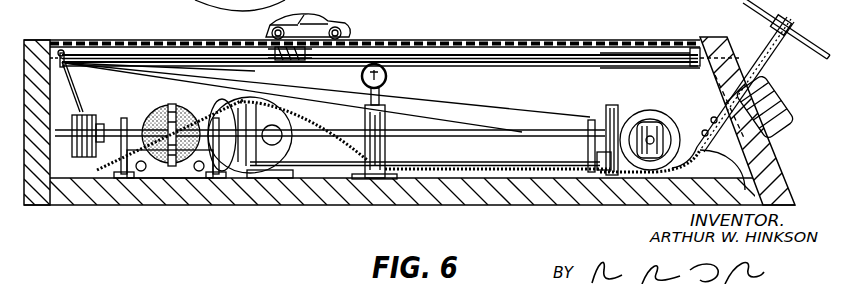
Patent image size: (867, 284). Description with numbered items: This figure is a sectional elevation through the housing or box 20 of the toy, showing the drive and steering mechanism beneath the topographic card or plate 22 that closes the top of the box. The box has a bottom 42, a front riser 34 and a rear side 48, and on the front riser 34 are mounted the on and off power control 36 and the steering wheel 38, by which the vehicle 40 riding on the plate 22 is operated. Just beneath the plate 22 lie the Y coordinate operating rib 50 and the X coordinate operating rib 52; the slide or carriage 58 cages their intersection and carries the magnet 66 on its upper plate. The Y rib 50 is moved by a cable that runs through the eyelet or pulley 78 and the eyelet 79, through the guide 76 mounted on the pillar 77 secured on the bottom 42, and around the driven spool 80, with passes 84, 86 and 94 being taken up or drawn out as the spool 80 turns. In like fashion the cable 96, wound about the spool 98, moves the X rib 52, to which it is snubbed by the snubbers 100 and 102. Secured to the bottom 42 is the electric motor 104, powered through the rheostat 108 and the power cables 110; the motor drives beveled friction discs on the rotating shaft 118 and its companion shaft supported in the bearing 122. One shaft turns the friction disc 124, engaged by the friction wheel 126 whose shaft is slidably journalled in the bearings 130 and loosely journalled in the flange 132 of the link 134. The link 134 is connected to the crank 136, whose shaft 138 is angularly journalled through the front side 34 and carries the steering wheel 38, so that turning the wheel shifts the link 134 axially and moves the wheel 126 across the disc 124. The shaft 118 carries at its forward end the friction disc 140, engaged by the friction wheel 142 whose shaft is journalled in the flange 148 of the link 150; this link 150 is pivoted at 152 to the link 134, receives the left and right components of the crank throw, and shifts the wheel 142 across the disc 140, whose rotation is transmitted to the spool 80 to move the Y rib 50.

The housing or box 20 is at (659, 5).
The topographic card or plate 22 is at (478, 43).
The front riser 34 is at (787, 180).
The on and off power control 36 is at (777, 116).
The steering wheel 38 is at (813, 35).
The vehicle 40 is at (343, 24).
The bottom 42 is at (503, 197).
The rear side 48 is at (38, 200).
The Y coordinate operating rib 50 is at (222, 44).
The X coordinate operating rib 52 is at (143, 53).
The slide or carriage 58 is at (302, 50).
The magnet 66 is at (283, 70).
The guide 76 is at (388, 82).
The pillar 77 is at (388, 151).
The eyelet or pulley 78 is at (57, 62).
The eyelet 79 is at (698, 50).
The driven spool 80 is at (660, 108).
The pass 84 is at (474, 100).
The pass 86 is at (662, 62).
The pass 94 is at (503, 128).
The cable 96 is at (61, 88).
The spool 98 is at (96, 117).
The snubber 100 is at (688, 53).
The snubber 102 is at (68, 52).
The electric motor 104 is at (270, 170).
The rheostat 108 is at (782, 147).
The power cables 110 is at (103, 167).
The rotating shaft 118 is at (483, 133).
The bearing 122 is at (162, 172).
The friction disc 124 is at (152, 115).
The friction wheel 126 is at (177, 165).
The bearings 130 is at (118, 170).
The flange 132 is at (252, 165).
The link 134 is at (358, 168).
The crank 136 is at (740, 168).
The shaft 138 is at (738, 58).
The friction disc 140 is at (630, 97).
The friction wheel 142 is at (694, 166).
The flange 148 is at (663, 128).
The link 150 is at (640, 168).
The pivot 152 is at (604, 170).